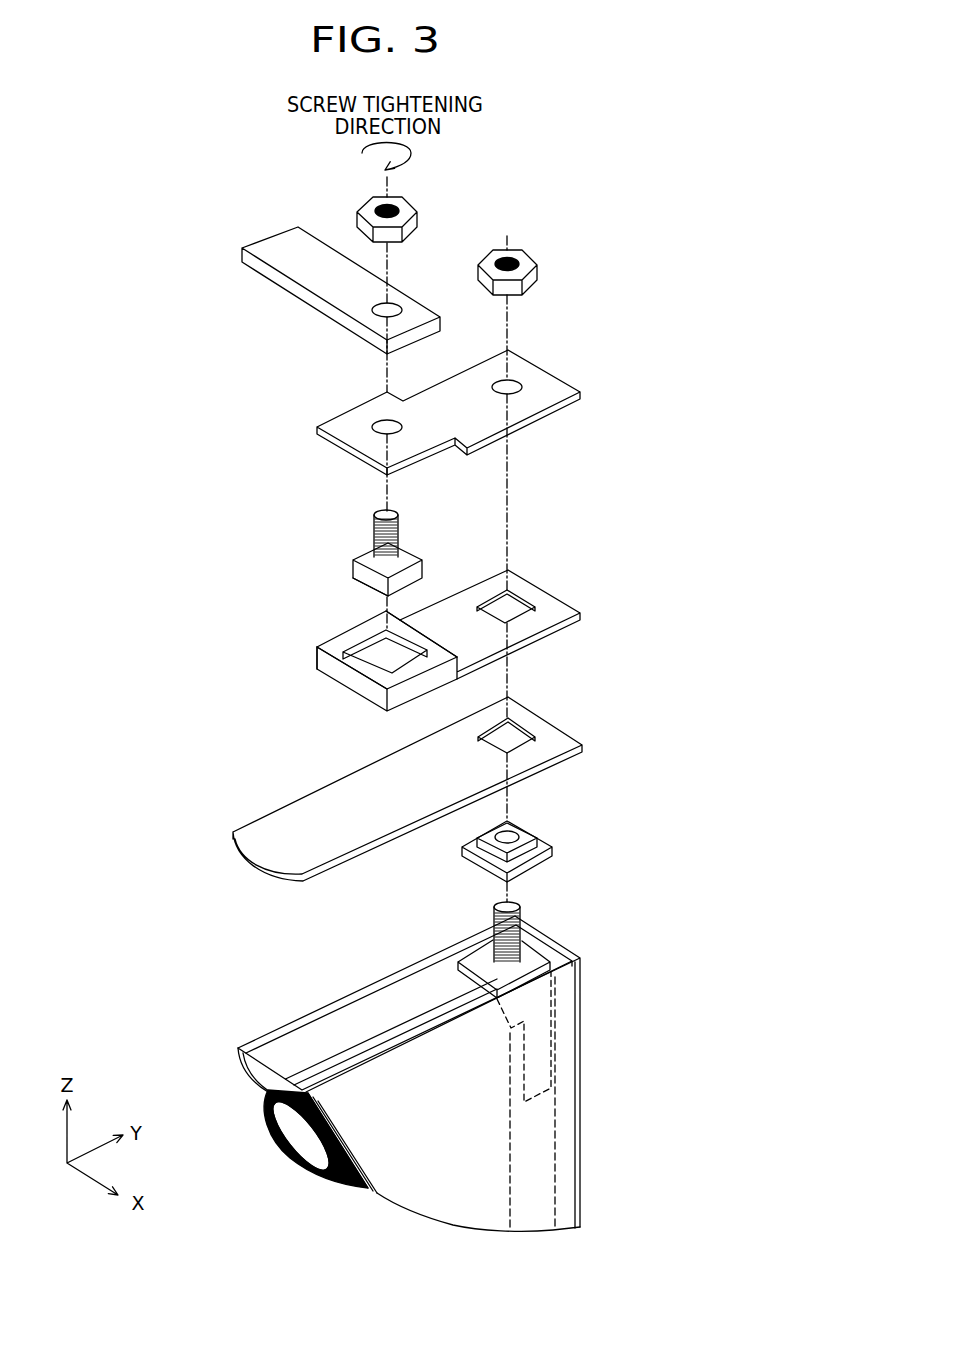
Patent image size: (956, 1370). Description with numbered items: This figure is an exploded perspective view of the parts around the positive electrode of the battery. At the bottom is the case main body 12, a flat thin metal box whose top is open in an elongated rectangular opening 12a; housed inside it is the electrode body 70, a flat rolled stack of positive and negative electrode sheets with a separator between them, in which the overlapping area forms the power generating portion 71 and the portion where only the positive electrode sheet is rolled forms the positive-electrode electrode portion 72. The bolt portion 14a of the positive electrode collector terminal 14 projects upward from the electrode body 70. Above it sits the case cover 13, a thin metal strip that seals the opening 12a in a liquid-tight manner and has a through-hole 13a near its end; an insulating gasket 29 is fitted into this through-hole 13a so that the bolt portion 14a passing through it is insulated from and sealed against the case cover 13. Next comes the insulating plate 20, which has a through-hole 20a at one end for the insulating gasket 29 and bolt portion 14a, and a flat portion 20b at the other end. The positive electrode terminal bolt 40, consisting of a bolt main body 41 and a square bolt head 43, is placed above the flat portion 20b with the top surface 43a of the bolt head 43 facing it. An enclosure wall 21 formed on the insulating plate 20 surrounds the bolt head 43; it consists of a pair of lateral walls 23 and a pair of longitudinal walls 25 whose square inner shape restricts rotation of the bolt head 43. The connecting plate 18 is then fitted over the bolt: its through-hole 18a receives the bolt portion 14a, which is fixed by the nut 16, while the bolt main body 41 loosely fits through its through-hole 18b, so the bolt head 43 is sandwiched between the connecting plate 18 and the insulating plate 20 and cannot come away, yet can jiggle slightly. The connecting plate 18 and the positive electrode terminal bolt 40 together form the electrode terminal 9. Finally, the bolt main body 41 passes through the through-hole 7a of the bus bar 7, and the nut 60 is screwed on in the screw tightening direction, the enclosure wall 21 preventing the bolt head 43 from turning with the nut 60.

The bus bar 7 is at (339, 261).
The through-hole 7a is at (378, 294).
The nut 60 is at (414, 222).
The nut 16 is at (537, 273).
The connecting plate 18 is at (431, 405).
The through-hole 18a is at (510, 368).
The through-hole 18b is at (380, 419).
The electrode terminal 9 is at (232, 525).
The positive electrode terminal bolt 40 is at (291, 543).
The bolt main body 41 is at (373, 527).
The bolt head 43 is at (366, 571).
The top surface 43a is at (352, 592).
The insulating plate 20 is at (447, 647).
The through-hole 20a is at (510, 591).
The flat portion 20b is at (320, 670).
The enclosure wall 21 is at (372, 650).
The lateral walls 23 is at (357, 634).
The longitudinal walls 25 is at (414, 630).
The case cover 13 is at (439, 780).
The through-hole 13a is at (512, 722).
The insulating gasket 29 is at (545, 843).
The case main body 12 is at (416, 1049).
The opening 12a is at (272, 1046).
The positive electrode collector terminal 14 is at (554, 985).
The bolt portion 14a is at (523, 914).
The positive-electrode electrode portion 72 is at (543, 1155).
The electrode body 70 is at (275, 1149).
The power generating portion 71 is at (317, 1138).